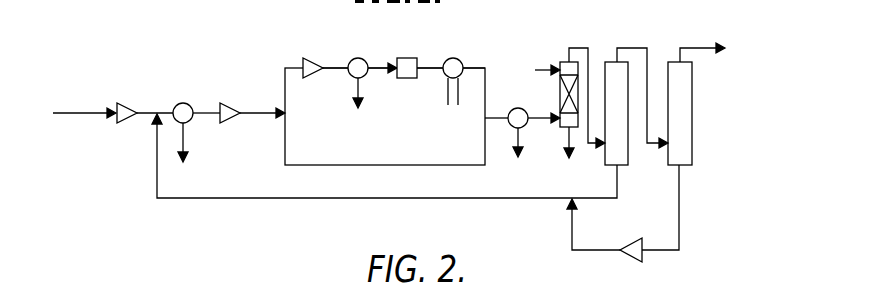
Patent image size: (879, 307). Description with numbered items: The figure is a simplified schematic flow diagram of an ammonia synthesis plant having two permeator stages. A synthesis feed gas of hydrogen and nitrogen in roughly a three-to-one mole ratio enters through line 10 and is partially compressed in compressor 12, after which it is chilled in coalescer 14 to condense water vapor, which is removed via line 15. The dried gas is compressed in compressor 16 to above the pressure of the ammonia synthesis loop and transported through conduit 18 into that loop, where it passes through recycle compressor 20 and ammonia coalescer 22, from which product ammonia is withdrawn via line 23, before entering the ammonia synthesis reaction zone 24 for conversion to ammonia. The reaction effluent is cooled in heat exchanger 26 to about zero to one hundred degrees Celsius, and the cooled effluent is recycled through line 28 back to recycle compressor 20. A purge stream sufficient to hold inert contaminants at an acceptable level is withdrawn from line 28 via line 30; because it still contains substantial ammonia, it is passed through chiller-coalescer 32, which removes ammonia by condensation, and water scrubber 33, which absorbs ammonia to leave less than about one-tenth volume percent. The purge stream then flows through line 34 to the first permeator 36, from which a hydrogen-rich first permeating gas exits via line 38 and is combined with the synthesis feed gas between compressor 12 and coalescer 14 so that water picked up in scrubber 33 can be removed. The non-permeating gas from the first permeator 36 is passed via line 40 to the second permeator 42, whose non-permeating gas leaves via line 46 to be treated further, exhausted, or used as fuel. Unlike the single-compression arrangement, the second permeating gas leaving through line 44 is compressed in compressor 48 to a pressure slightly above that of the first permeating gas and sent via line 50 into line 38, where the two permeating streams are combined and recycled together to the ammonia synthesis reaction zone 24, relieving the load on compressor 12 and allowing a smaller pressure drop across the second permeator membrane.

The line 10 is at (74, 113).
The compressor 12 is at (126, 103).
The coalescer 14 is at (185, 103).
The line 15 is at (186, 139).
The compressor 16 is at (231, 103).
The conduit 18 is at (257, 118).
The recycle compressor 20 is at (315, 47).
The ammonia coalescer 22 is at (363, 58).
The line 23 is at (355, 88).
The ammonia synthesis reaction zone 24 is at (407, 58).
The heat exchanger 26 is at (457, 58).
The line 28 is at (377, 165).
The line 30 is at (497, 118).
The chiller-coalescer 32 is at (534, 102).
The water scrubber 33 is at (558, 128).
The line 34 is at (578, 48).
The first permeator 36 is at (606, 62).
The line 38 is at (618, 185).
The line 40 is at (633, 48).
The second permeator 42 is at (692, 118).
The line 44 is at (679, 212).
The line 46 is at (698, 48).
The compressor 48 is at (646, 262).
The line 50 is at (572, 228).